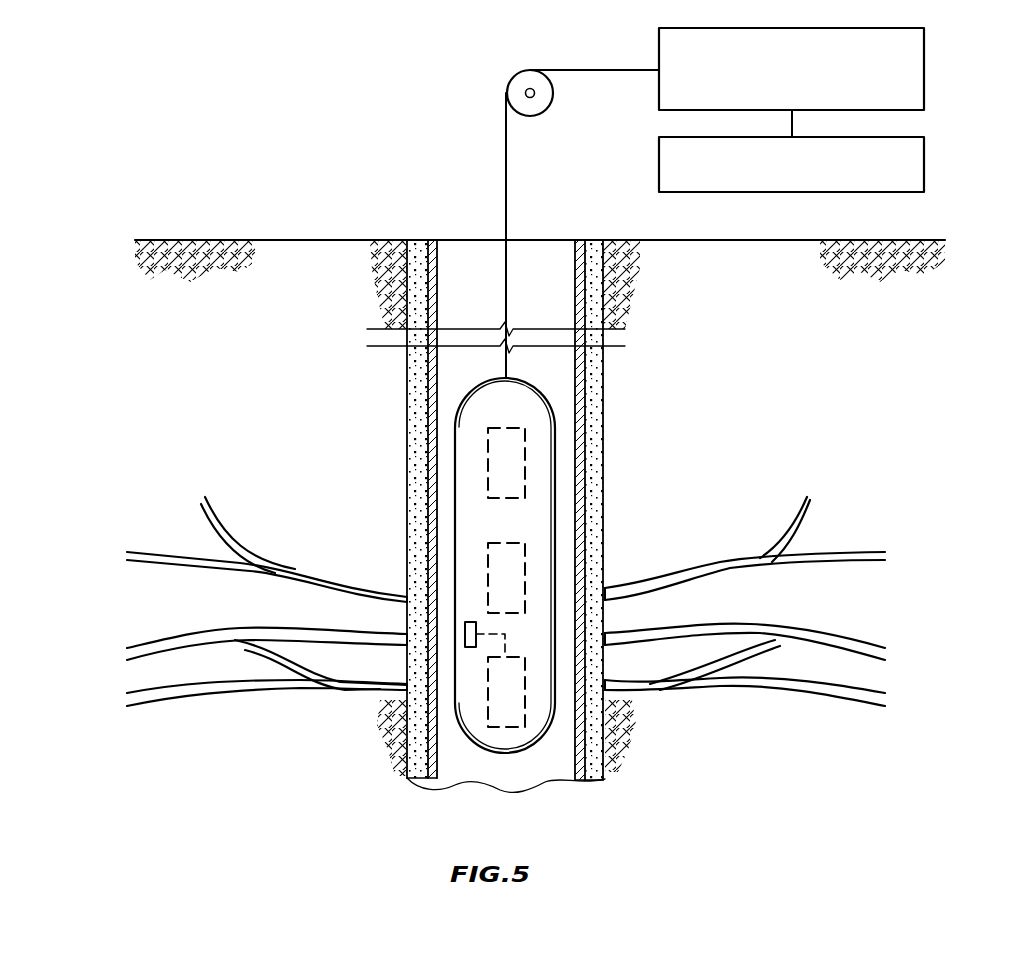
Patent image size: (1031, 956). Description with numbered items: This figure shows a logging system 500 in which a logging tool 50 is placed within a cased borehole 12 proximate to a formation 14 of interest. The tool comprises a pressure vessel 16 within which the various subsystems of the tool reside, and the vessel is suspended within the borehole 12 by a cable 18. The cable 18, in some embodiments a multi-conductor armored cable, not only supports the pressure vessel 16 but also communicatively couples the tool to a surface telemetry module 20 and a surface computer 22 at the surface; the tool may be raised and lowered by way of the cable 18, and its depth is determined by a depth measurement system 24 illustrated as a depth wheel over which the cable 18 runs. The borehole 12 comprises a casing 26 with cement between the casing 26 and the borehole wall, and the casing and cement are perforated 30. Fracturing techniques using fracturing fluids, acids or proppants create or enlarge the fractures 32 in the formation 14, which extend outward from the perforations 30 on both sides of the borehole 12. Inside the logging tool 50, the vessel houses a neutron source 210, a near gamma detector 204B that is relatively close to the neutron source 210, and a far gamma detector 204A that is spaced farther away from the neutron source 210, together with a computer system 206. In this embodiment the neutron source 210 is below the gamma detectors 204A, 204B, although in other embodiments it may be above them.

The logging system 500 is at (297, 93).
The surface telemetry module 20 is at (926, 56).
The surface computer 22 is at (926, 166).
The depth measurement system 24 is at (545, 112).
The cable 18 is at (507, 178).
The borehole 12 is at (490, 283).
The formation 14 is at (726, 307).
The pressure vessel 16 is at (455, 443).
The casing 26 is at (604, 503).
The logging tool 50 is at (557, 393).
The far gamma detector 204A is at (525, 452).
The near gamma detector 204B is at (488, 565).
The computer system 206 is at (465, 630).
The neutron source 210 is at (510, 730).
The perforations 30 is at (392, 690).
The fractures 32 is at (166, 552).